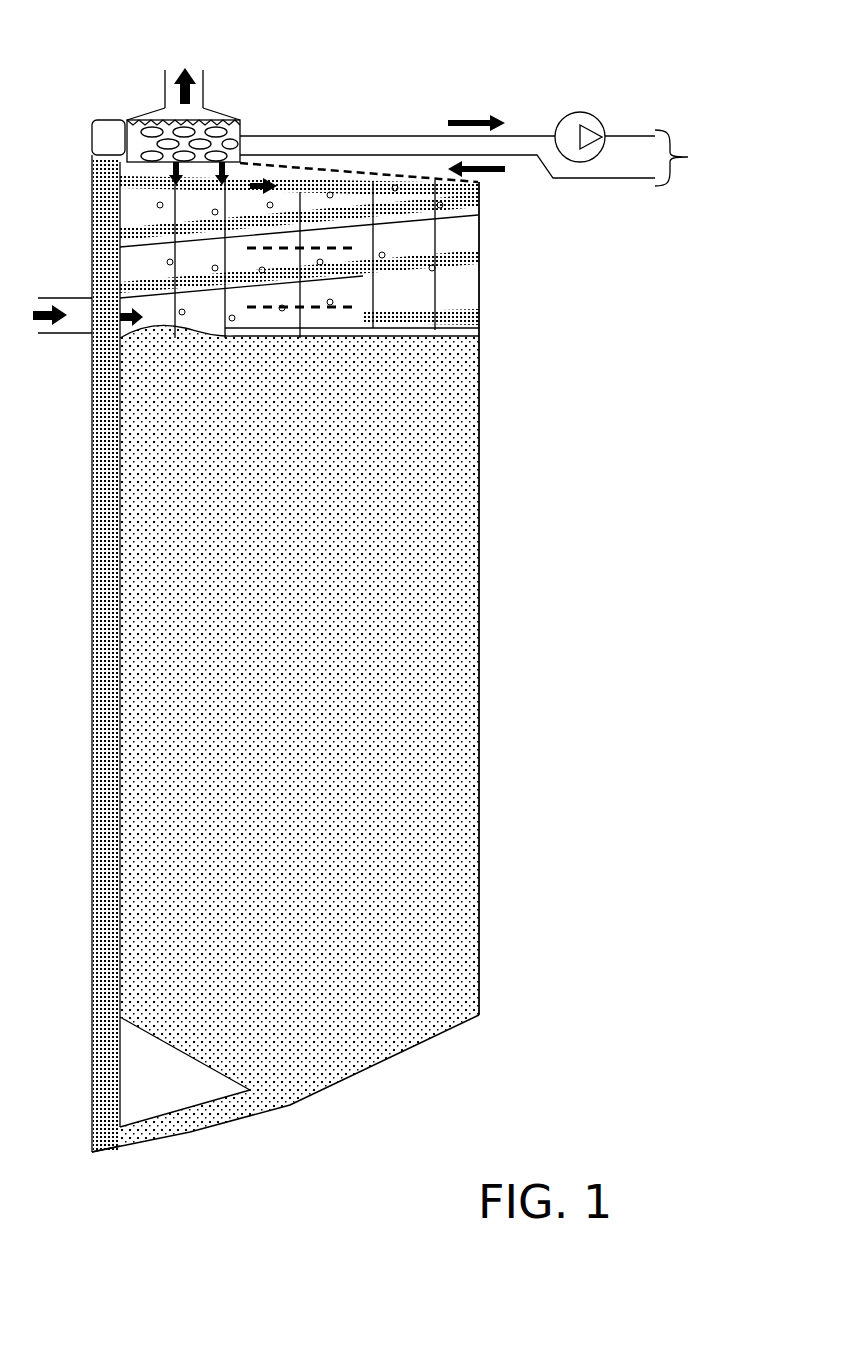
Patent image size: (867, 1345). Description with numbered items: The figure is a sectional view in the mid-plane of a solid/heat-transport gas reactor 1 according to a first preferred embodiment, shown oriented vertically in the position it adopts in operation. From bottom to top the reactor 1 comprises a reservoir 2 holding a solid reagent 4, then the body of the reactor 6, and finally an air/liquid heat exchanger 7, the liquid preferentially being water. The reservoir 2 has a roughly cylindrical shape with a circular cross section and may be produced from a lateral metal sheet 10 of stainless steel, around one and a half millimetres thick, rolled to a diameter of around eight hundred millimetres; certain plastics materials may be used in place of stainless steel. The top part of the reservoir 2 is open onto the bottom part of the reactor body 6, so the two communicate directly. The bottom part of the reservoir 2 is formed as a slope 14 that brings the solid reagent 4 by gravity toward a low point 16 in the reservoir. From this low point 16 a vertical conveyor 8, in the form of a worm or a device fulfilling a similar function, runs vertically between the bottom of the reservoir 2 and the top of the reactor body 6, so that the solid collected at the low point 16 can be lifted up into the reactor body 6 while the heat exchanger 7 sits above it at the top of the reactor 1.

The reactor 1 is at (684, 100).
The reservoir 2 is at (425, 1052).
The solid reagent 4 is at (458, 638).
The body of the reactor 6 is at (498, 253).
The air/liquid heat exchanger 7 is at (222, 109).
The vertical conveyor 8 is at (92, 1025).
The lateral metal sheet 10 is at (480, 519).
The slope 14 is at (278, 1095).
The low point 16 is at (117, 1152).